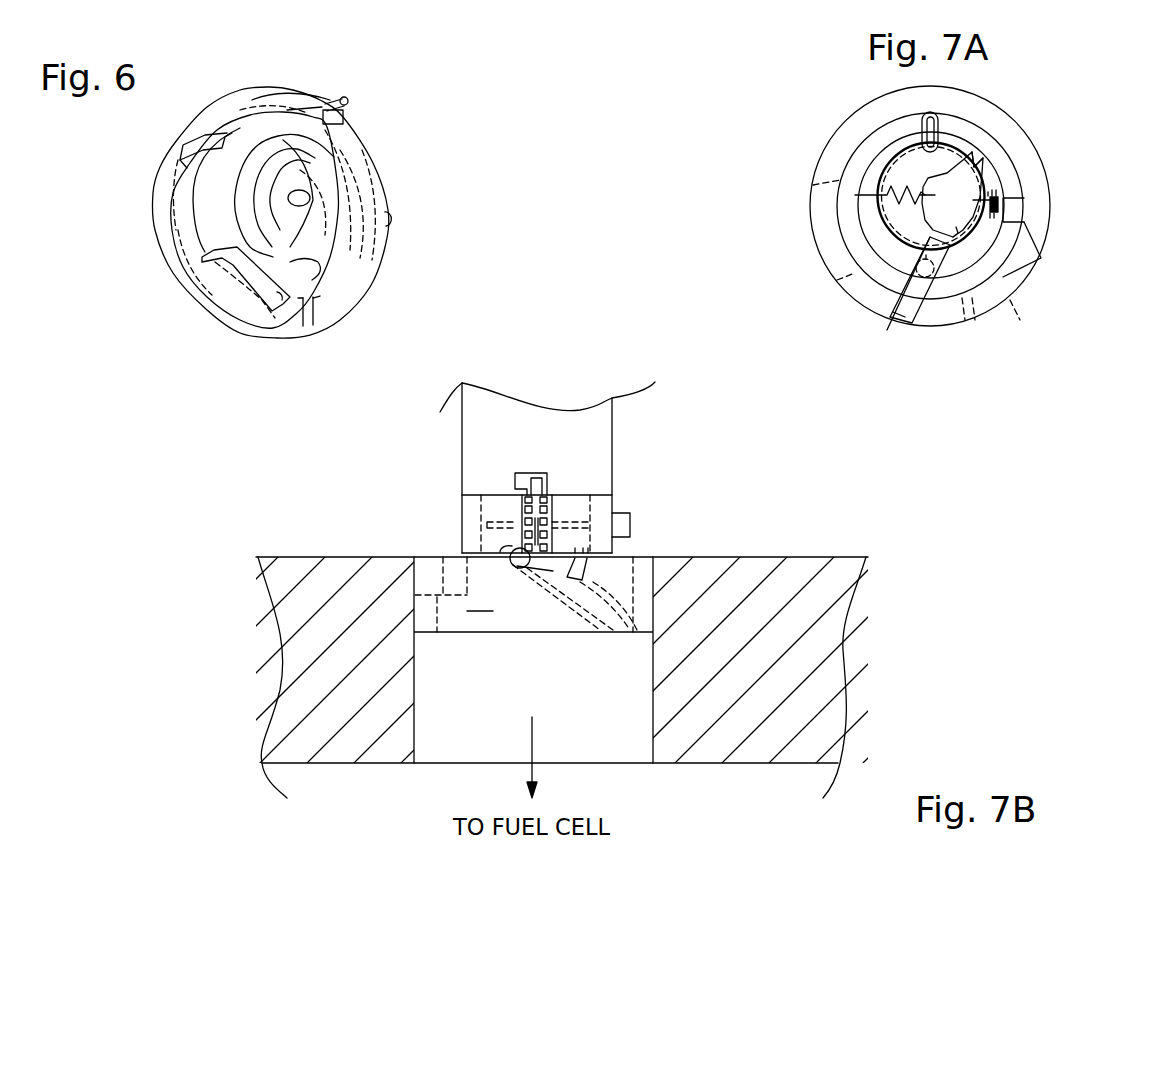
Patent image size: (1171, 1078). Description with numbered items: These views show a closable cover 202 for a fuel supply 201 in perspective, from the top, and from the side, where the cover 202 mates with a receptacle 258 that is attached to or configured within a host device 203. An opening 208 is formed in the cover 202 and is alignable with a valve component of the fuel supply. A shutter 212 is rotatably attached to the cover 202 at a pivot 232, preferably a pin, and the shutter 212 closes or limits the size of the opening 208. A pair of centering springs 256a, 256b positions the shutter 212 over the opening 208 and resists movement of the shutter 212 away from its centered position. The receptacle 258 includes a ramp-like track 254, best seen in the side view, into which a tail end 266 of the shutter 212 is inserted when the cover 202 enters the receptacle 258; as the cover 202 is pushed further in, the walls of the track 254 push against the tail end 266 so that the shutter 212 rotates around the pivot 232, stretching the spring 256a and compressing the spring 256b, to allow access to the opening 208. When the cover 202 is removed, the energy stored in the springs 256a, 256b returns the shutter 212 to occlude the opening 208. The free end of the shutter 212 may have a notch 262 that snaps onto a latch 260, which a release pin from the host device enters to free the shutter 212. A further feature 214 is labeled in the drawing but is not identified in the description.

In FIG. 7B, the fuel supply 201 is at (590, 438).
In FIG. 6, the cover 202 is at (373, 163).
In FIG. 7B, the cover 202 is at (622, 528).
In FIG. 7B, the host device 203 is at (820, 646).
In FIG. 7A, the opening 208 is at (917, 163).
In FIG. 6, the shutter 212 is at (300, 205).
In FIG. 7A, the shutter 212 is at (935, 210).
In FIG. 6, the opening 214 is at (292, 263).
In FIG. 7A, the pivot 232 is at (934, 270).
In FIG. 6, the ramp-like track 254 is at (237, 263).
In FIG. 7A, the ramp-like track 254 is at (934, 312).
In FIG. 7B, the ramp-like track 254 is at (553, 570).
In FIG. 7A, the centering spring 256a is at (858, 200).
In FIG. 7A, the centering spring 256b is at (1023, 198).
In FIG. 6, the receptacle 258 is at (252, 100).
In FIG. 7B, the receptacle 258 is at (467, 611).
In FIG. 7A, the latch 260 is at (933, 132).
In FIG. 7A, the notch 262 is at (985, 170).
In FIG. 6, the tail end 266 is at (268, 298).
In FIG. 7A, the tail end 266 is at (887, 330).